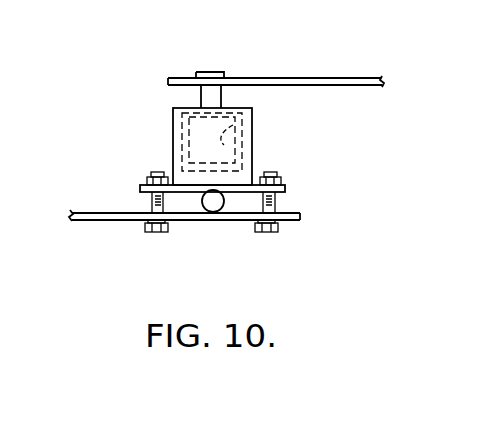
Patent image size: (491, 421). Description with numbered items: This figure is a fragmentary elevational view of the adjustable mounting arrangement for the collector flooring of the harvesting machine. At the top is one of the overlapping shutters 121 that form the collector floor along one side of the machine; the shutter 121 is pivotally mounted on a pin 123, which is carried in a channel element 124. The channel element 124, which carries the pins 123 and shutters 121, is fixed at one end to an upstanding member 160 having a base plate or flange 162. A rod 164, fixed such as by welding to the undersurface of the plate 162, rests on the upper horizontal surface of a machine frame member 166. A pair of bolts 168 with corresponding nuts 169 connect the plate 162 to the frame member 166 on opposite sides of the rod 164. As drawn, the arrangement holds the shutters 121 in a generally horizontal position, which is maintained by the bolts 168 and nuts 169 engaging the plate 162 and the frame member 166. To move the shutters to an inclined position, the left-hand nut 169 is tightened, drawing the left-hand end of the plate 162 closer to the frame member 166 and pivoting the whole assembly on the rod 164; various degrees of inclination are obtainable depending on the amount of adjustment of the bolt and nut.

The shutter 121 is at (318, 78).
The pin 123 is at (223, 96).
The channel element 124 is at (237, 147).
The upstanding member 160 is at (173, 118).
The base plate 162 is at (142, 188).
The rod 164 is at (213, 212).
The machine frame member 166 is at (300, 217).
The bolt 168 is at (158, 233).
The nut 169 is at (156, 173).